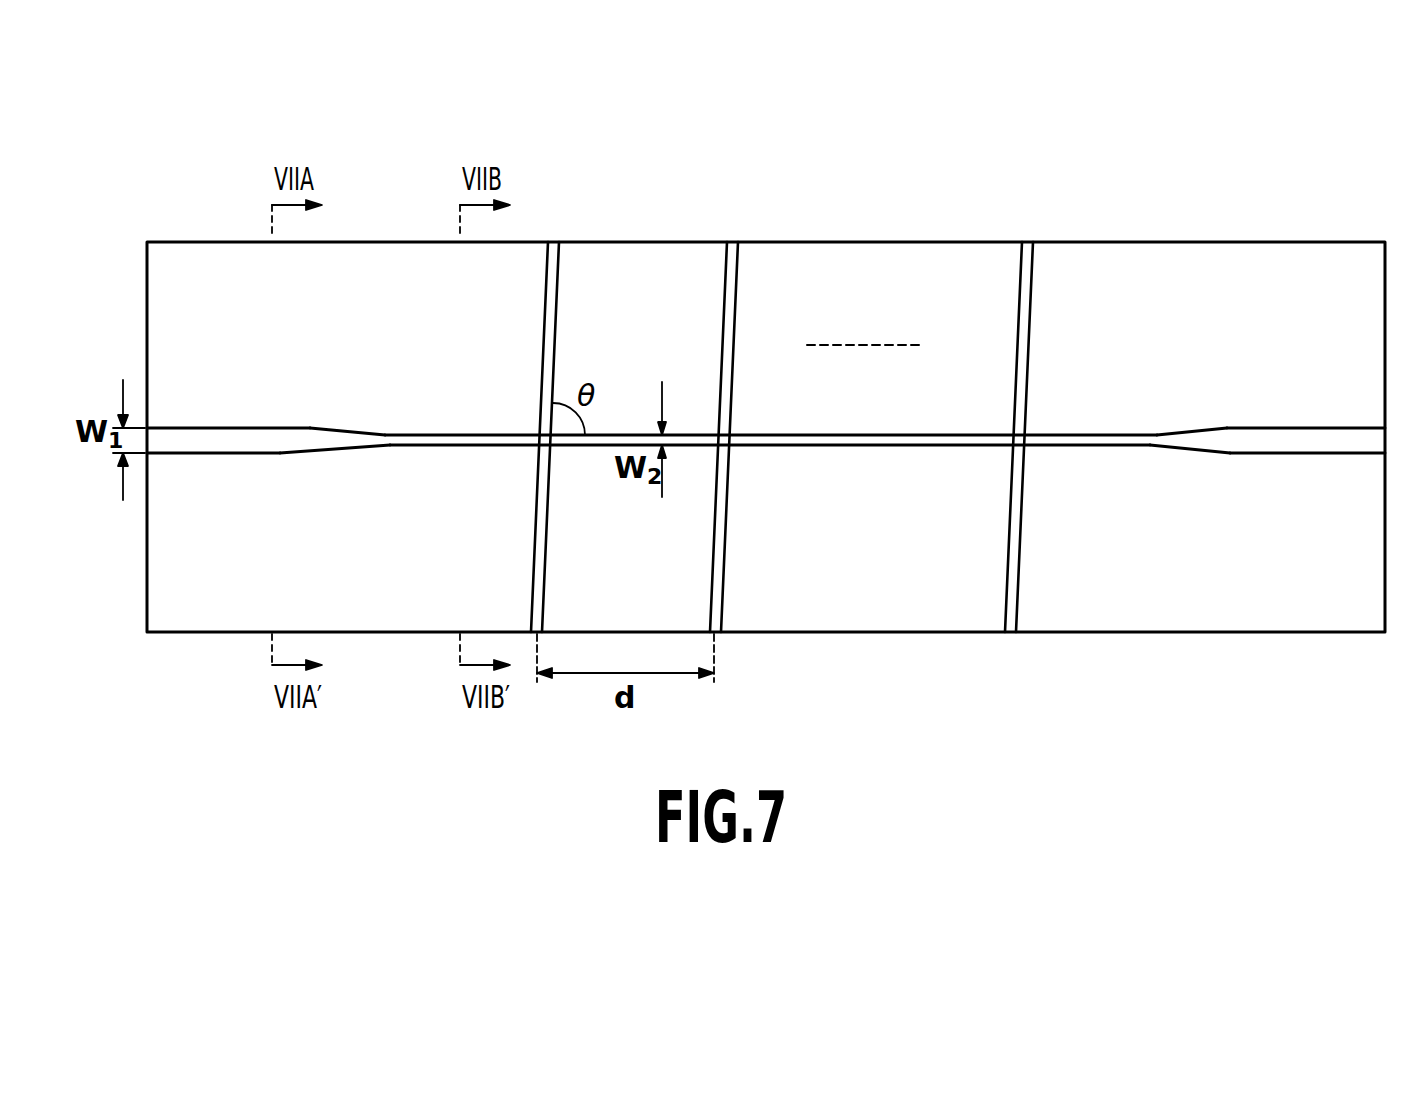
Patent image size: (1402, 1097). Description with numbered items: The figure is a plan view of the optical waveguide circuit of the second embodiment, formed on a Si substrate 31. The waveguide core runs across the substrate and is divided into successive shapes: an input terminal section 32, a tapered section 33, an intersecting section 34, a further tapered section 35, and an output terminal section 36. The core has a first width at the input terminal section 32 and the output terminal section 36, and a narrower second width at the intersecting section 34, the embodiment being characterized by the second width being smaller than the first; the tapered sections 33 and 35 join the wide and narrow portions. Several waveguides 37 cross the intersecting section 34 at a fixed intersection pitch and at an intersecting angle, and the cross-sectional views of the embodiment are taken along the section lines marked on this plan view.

The Si substrate 31 is at (175, 241).
The input terminal section 32 is at (196, 436).
The tapered section 33 is at (339, 440).
The intersecting section 34 is at (427, 440).
The tapered section 35 is at (1187, 436).
The output terminal section 36 is at (1321, 436).
The waveguide intersecting with the intersecting section 37 is at (558, 241).